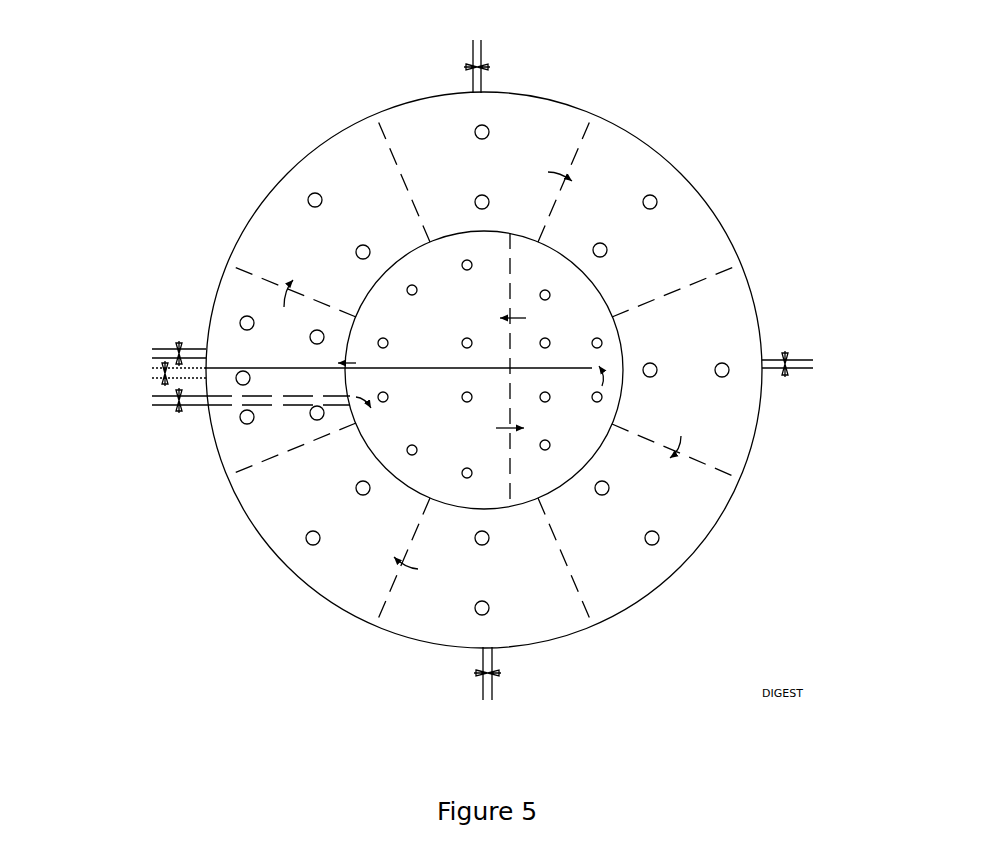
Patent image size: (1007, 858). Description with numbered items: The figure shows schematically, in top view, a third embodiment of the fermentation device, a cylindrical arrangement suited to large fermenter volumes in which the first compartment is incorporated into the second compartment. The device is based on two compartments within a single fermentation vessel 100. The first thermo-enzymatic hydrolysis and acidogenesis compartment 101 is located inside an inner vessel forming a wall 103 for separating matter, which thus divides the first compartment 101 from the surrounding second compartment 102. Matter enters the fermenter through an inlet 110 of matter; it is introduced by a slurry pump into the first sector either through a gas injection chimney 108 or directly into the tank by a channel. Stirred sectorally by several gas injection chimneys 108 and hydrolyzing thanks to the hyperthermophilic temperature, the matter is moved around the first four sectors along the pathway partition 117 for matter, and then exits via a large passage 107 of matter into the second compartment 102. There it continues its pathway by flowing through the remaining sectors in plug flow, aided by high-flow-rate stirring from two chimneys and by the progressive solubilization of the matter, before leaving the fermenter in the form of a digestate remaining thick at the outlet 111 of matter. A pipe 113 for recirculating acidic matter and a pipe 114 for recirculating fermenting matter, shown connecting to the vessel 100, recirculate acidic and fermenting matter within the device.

The fermentation vessel 100 is at (330, 137).
The first compartment 101 is at (513, 232).
The second compartment 102 is at (692, 228).
The wall for separating matter 103 is at (467, 508).
The passage of matter 107 is at (340, 362).
The gas injection chimneys 108 is at (313, 547).
The inlet of matter 110 is at (165, 405).
The outlet of matter 111 is at (152, 373).
The pipe for recirculating acidic matter 113 is at (163, 350).
The pipe for recirculating fermenting matter 114 is at (470, 60).
The pathway partition for matter 117 is at (562, 168).